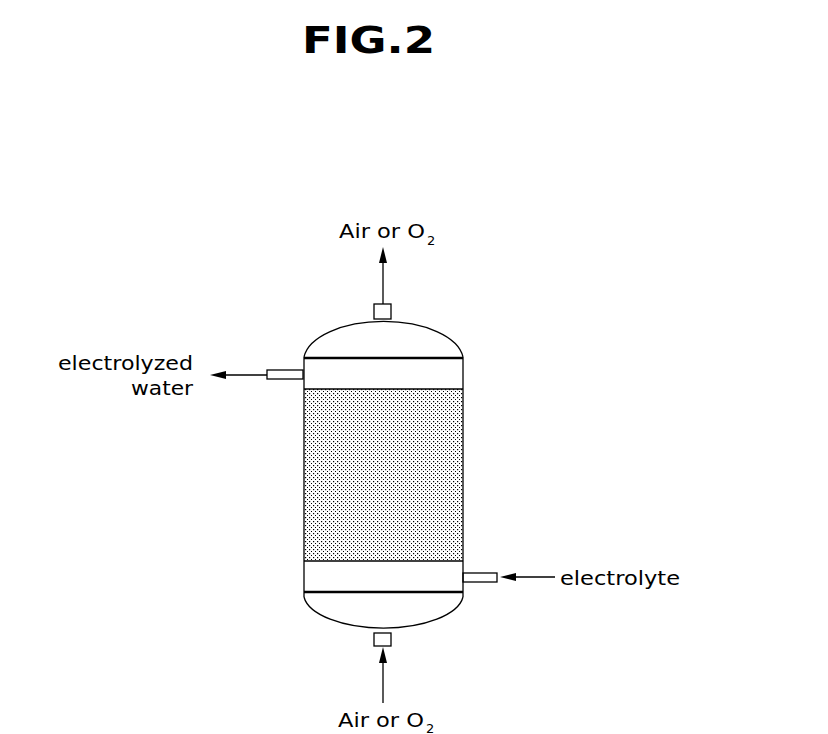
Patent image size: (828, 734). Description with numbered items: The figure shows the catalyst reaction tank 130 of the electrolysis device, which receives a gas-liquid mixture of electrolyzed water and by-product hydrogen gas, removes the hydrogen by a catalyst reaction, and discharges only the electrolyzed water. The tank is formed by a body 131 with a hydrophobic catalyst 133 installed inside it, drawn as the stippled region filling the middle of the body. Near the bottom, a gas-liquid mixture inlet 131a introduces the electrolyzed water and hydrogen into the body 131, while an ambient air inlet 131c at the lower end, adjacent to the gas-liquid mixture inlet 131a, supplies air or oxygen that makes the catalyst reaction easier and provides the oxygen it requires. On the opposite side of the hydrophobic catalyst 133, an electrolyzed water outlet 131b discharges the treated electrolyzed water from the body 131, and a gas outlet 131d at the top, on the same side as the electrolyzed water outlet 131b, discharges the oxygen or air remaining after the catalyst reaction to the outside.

The catalyst reaction tank 130 is at (391, 461).
The body 131 is at (464, 375).
The gas-liquid mixture inlet 131a is at (488, 573).
The electrolyzed water outlet 131b is at (280, 370).
The ambient air inlet 131c is at (393, 638).
The gas outlet 131d is at (392, 312).
The hydrophobic catalyst 133 is at (455, 427).